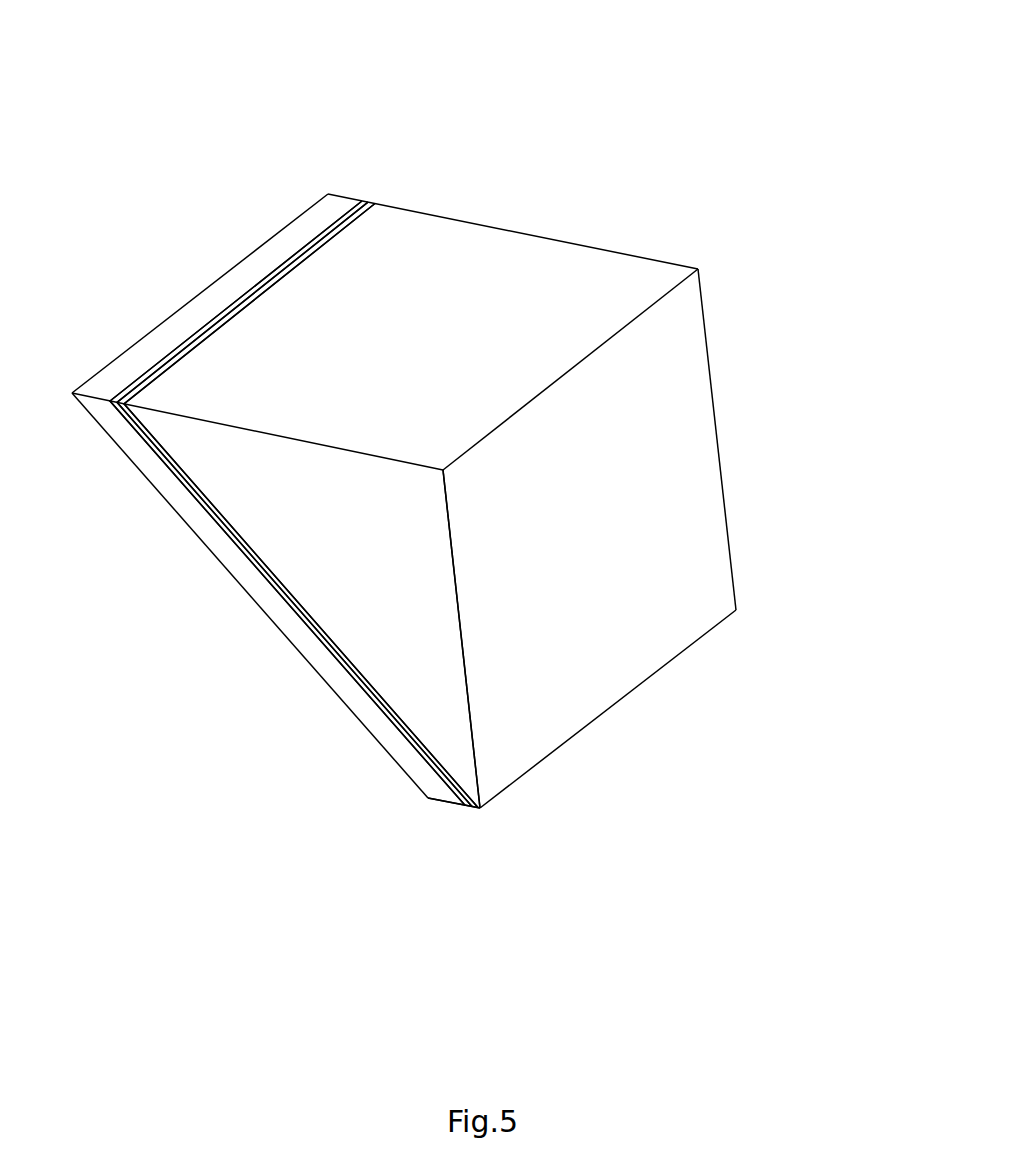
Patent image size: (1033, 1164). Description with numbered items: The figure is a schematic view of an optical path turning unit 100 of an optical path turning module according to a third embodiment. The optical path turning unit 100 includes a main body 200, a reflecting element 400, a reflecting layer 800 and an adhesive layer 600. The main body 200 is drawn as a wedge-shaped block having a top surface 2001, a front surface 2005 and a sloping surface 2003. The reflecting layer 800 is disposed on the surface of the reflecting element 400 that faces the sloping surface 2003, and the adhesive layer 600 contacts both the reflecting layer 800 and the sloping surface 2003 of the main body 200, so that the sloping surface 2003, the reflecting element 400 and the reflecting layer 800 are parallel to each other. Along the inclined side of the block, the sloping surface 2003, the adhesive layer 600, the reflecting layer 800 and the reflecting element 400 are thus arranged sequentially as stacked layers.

The optical path turning unit 100 is at (143, 47).
The main body 200 is at (771, 216).
The top surface 2001 is at (467, 235).
The sloping surface 2003 is at (404, 731).
The front surface 2005 is at (678, 503).
The reflecting element 400 is at (142, 462).
The adhesive layer 600 is at (298, 603).
The reflecting layer 800 is at (223, 527).